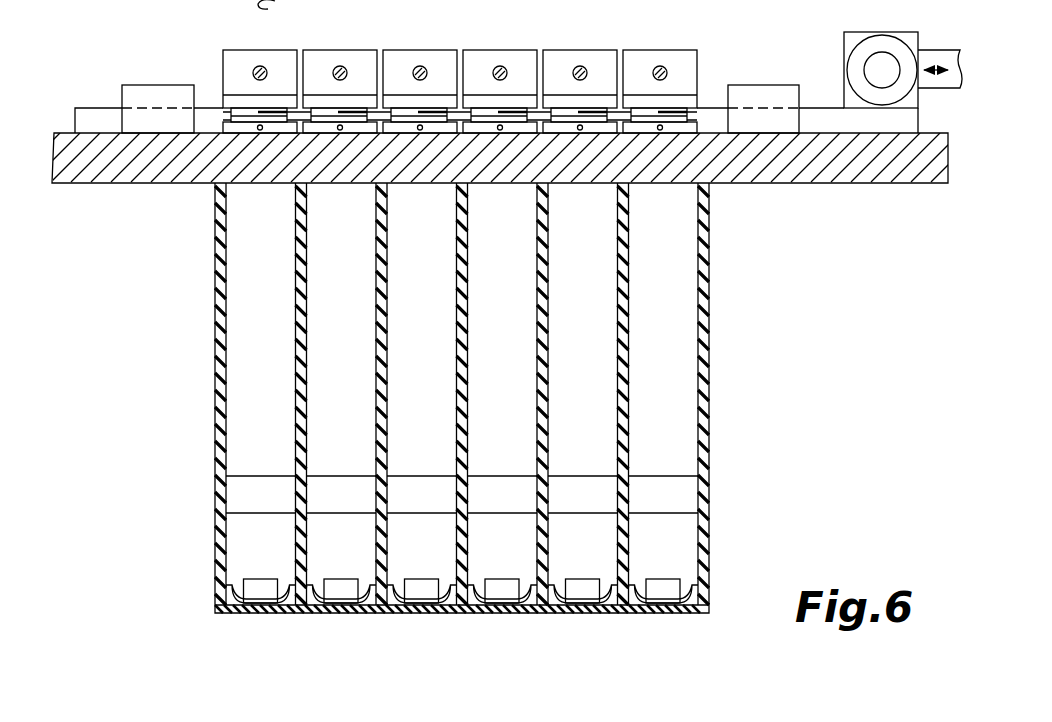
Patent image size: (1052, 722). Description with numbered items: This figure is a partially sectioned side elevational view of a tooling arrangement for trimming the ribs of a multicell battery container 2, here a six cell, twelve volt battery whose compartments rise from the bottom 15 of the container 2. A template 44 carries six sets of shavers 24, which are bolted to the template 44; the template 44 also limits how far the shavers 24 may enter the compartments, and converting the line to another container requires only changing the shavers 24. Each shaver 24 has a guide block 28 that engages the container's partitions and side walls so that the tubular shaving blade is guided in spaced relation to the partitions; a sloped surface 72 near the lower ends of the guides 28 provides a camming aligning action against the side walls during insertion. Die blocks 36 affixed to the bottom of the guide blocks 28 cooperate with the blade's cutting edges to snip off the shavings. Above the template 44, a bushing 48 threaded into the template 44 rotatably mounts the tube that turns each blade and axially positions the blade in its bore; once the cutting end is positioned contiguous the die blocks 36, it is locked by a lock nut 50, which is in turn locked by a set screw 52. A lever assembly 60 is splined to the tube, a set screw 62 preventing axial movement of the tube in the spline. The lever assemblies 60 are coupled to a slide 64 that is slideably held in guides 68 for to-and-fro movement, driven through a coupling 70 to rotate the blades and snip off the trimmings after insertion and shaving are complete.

The multicell battery container 2 is at (712, 303).
The bottom of the container 15 is at (418, 612).
The shaver 24 is at (325, 457).
The guide block 28 is at (322, 345).
The die blocks 36 is at (462, 618).
The template 44 is at (125, 157).
The bushing 48 is at (477, 100).
The lock nut 50 is at (433, 129).
The set screw 52 is at (580, 130).
The lever assembly 60 is at (390, 62).
The set screw 62 is at (573, 72).
The slide 64 is at (849, 123).
The guides 68 is at (147, 100).
The coupling 70 is at (900, 36).
The sloped surface 72 is at (268, 500).